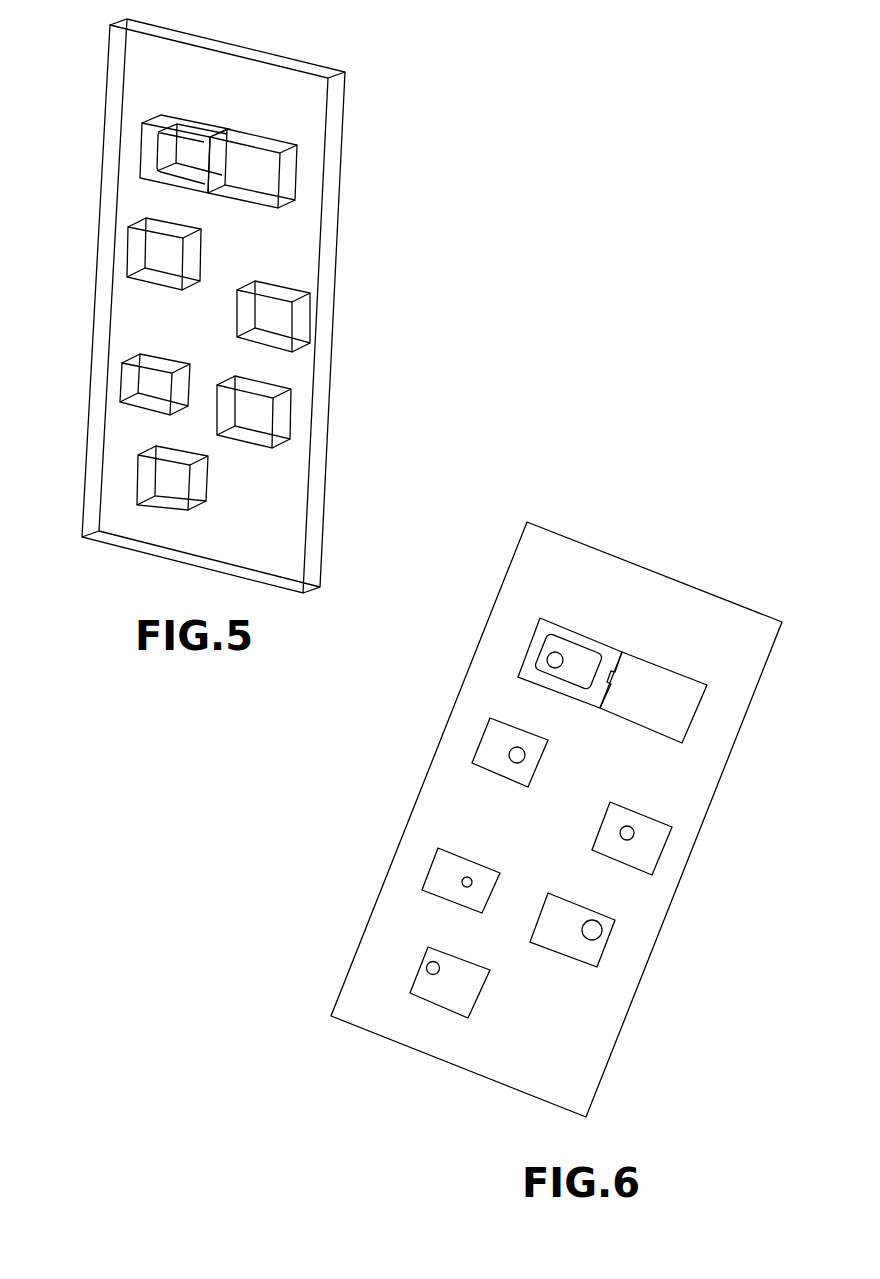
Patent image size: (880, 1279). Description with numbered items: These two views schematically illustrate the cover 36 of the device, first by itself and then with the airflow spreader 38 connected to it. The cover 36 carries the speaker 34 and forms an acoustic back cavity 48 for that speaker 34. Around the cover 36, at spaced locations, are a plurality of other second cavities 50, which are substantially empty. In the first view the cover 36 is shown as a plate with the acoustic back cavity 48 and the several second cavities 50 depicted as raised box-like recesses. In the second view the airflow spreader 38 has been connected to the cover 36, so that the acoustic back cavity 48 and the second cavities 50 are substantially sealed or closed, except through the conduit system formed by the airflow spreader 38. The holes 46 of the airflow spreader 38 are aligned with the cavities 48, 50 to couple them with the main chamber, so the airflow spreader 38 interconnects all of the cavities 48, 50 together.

In FIG. 5, the speaker 34 is at (175, 152).
In FIG. 5, the cover 36 is at (328, 387).
In FIG. 6, the cover 36 is at (778, 658).
In FIG. 6, the airflow spreader 38 is at (638, 672).
In FIG. 6, the holes 46 is at (550, 658).
In FIG. 5, the acoustic back cavity 48 is at (277, 168).
In FIG. 6, the acoustic back cavity 48 is at (685, 705).
In FIG. 5, the second cavities 50 is at (148, 257).
In FIG. 6, the second cavities 50 is at (482, 738).